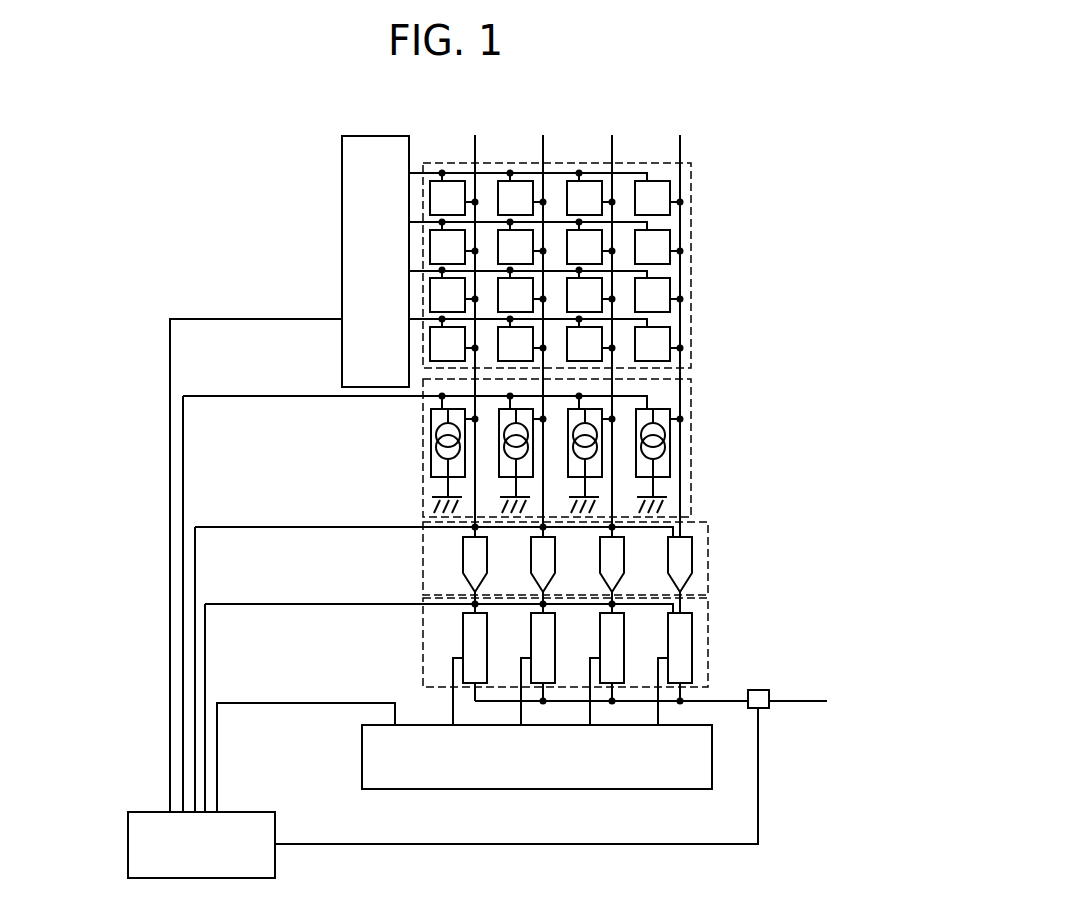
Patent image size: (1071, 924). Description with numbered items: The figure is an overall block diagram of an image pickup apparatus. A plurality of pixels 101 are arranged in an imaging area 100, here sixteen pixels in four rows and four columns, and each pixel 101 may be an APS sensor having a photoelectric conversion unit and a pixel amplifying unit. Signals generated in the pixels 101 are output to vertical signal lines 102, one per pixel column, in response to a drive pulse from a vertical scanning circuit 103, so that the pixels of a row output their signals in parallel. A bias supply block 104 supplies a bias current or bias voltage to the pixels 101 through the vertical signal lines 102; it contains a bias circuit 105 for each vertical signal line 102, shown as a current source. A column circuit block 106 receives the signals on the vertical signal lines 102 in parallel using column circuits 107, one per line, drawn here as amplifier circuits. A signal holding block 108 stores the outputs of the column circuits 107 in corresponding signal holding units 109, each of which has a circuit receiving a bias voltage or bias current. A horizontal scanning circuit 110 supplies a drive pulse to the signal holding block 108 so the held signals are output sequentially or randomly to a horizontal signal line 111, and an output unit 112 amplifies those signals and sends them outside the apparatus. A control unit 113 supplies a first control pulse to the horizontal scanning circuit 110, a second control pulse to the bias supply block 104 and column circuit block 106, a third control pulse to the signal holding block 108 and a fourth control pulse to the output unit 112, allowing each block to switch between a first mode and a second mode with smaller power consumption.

The imaging area 100 is at (691, 228).
The pixel 101 is at (670, 186).
The vertical signal line 102 is at (680, 145).
The vertical scanning circuit 103 is at (342, 188).
The bias supply block 104 is at (691, 438).
The bias circuit 105 is at (650, 407).
The column circuit block 106 is at (708, 557).
The column circuit 107 is at (692, 540).
The signal holding block 108 is at (708, 642).
The signal holding unit 109 is at (692, 622).
The horizontal scanning circuit 110 is at (712, 745).
The horizontal signal line 111 is at (728, 700).
The output unit 112 is at (770, 689).
The control unit 113 is at (128, 833).